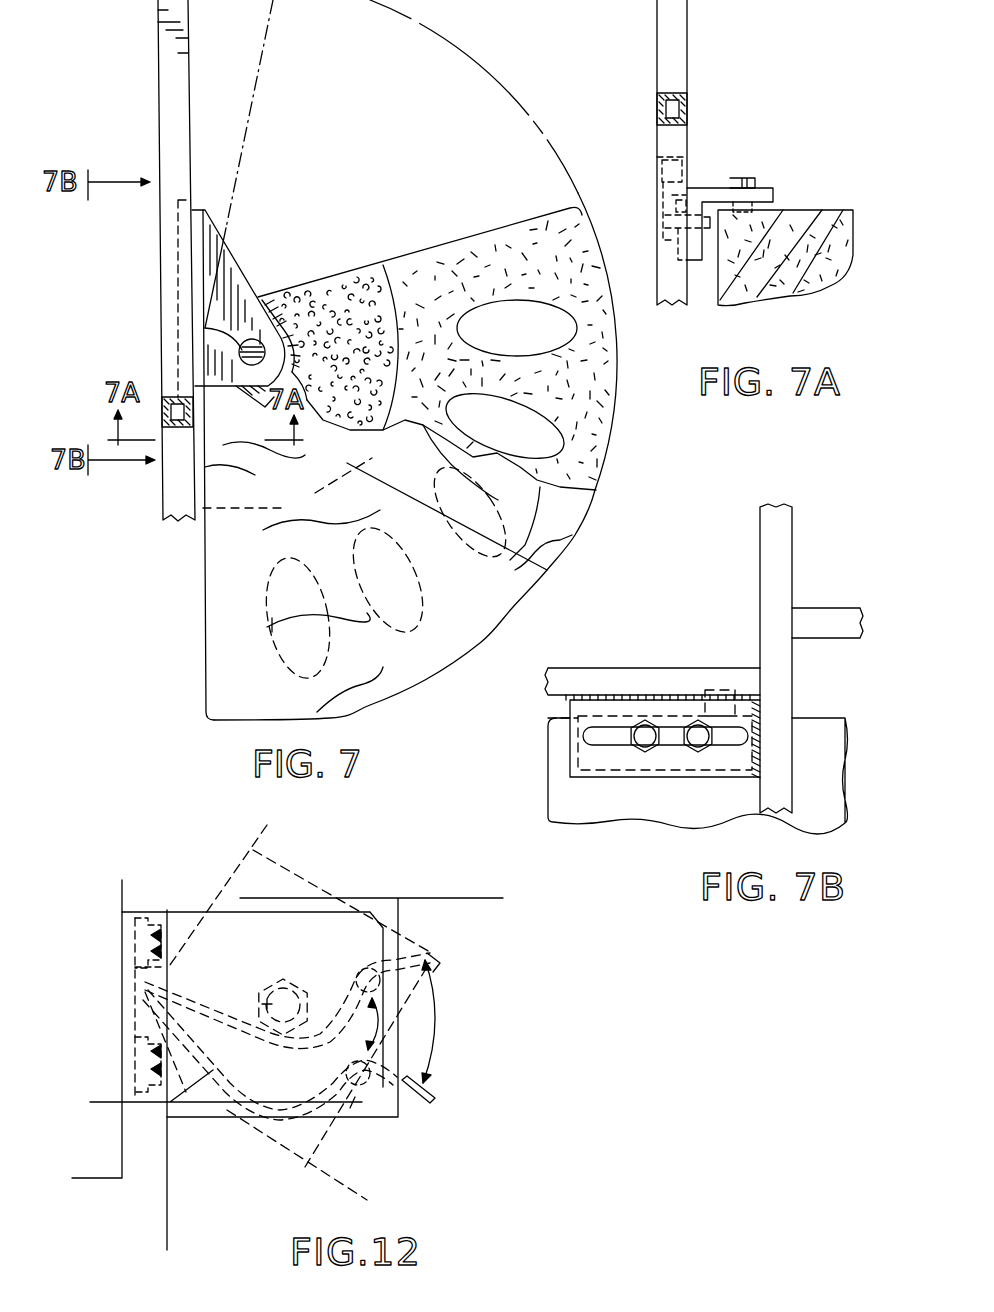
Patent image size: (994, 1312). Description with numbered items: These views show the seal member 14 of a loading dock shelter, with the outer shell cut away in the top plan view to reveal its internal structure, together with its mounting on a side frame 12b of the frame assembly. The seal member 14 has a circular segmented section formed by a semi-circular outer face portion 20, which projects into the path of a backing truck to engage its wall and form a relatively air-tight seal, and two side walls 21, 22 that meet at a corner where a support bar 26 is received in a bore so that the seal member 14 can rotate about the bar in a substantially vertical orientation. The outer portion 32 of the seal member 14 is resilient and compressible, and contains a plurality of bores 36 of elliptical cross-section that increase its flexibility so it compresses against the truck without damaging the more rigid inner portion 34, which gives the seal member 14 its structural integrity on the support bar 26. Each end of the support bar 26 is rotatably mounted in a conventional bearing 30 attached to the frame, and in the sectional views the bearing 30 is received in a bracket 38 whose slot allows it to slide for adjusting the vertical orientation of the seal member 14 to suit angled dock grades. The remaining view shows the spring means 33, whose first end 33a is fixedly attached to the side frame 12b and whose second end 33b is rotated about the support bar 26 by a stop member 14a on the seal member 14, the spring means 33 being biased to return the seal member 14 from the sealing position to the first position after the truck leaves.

In FIG. 7, the side frame 12b is at (158, 80).
In FIG. 7A, the side frame 12b is at (660, 38).
In FIG. 7B, the side frame 12b is at (760, 543).
In FIG. 12, the side frame 12b is at (122, 1040).
In FIG. 7, the seal member 14 is at (632, 440).
In FIG. 7A, the seal member 14 is at (820, 210).
In FIG. 7B, the seal member 14 is at (696, 751).
In FIG. 12, the seal member 14 is at (167, 1228).
In FIG. 12, the stop member 14a is at (363, 1077).
In FIG. 7, the face portion 20 is at (483, 600).
In FIG. 7, the first side wall 21 is at (275, 673).
In FIG. 7, the second side wall 22 is at (457, 247).
In FIG. 7, the support bar 26 is at (205, 328).
In FIG. 12, the support bar 26 is at (267, 1004).
In FIG. 7, the bearing 30 is at (282, 332).
In FIG. 7A, the bearing 30 is at (758, 189).
In FIG. 7B, the bearing 30 is at (580, 703).
In FIG. 7, the outer portion 32 is at (420, 668).
In FIG. 12, the spring means 33 is at (244, 1012).
In FIG. 12, the first end of spring means 33a is at (135, 933).
In FIG. 12, the second end of spring means 33b is at (437, 1100).
In FIG. 7, the inner portion 34 is at (347, 297).
In FIG. 7, the bores 36 is at (534, 338).
In FIG. 7A, the bracket 38 is at (658, 193).
In FIG. 7B, the bracket 38 is at (600, 758).